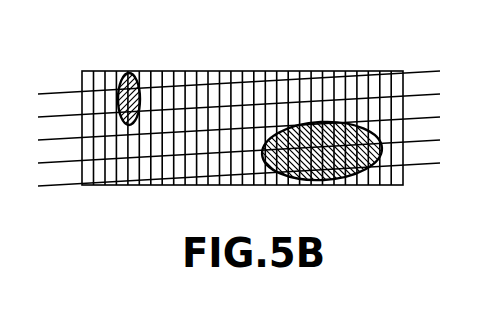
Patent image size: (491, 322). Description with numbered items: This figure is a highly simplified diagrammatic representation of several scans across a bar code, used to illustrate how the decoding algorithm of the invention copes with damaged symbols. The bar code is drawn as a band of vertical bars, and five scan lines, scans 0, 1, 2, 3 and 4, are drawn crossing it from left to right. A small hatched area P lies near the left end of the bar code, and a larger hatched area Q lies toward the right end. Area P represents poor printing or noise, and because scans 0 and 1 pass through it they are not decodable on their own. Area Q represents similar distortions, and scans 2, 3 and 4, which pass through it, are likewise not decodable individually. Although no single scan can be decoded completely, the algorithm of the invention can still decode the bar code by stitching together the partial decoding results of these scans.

The scan 0 is at (229, 87).
The scan 1 is at (230, 110).
The scan 2 is at (229, 133).
The scan 3 is at (229, 156).
The scan 4 is at (228, 178).
The area P is at (125, 95).
The area Q is at (311, 165).